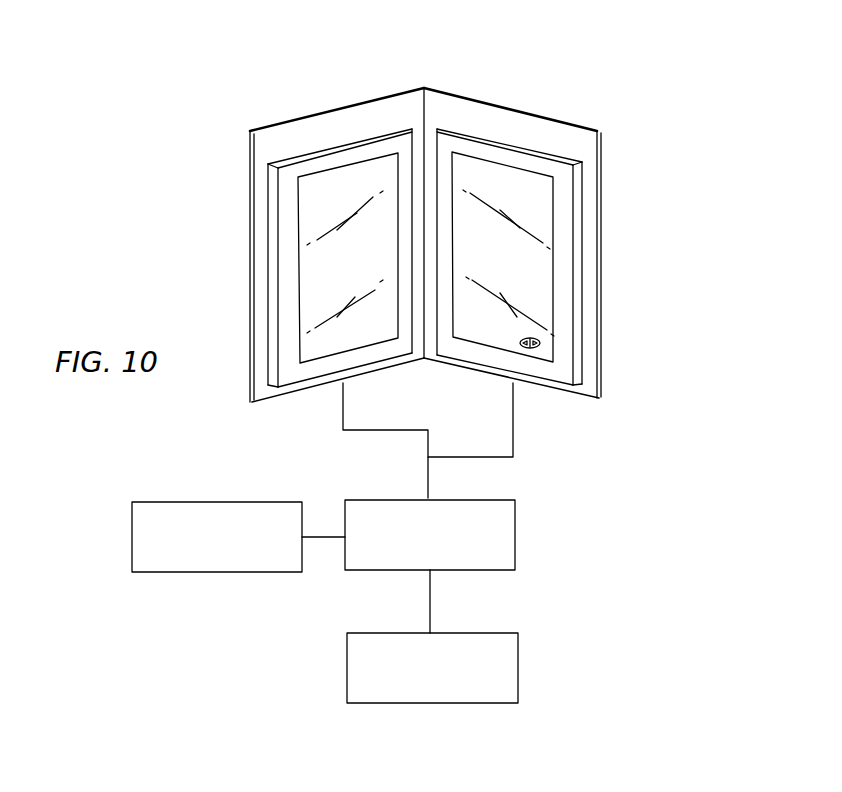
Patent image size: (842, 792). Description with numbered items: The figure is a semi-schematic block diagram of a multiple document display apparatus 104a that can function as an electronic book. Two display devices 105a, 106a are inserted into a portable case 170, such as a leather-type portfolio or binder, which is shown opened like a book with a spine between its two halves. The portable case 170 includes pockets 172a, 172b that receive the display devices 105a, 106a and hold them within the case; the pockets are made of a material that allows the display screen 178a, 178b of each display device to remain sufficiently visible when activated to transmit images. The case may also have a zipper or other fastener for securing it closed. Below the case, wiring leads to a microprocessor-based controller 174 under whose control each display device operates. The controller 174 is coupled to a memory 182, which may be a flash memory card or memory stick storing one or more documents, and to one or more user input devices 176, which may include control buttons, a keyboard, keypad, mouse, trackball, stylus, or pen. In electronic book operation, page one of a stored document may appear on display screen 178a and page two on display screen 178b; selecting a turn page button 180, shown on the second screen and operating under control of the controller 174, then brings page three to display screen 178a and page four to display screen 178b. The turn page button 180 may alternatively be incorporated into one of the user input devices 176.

The multiple document display apparatus 104a is at (452, 255).
The display device 105a is at (347, 157).
The display device 106a is at (502, 156).
The portable case 170 is at (402, 95).
The pocket 172a is at (312, 200).
The pocket 172b is at (538, 202).
The display screen 178a is at (322, 185).
The display screen 178b is at (528, 182).
The turn page button 180 is at (533, 350).
The controller 174 is at (390, 570).
The user input devices 176 is at (392, 703).
The memory 182 is at (182, 572).